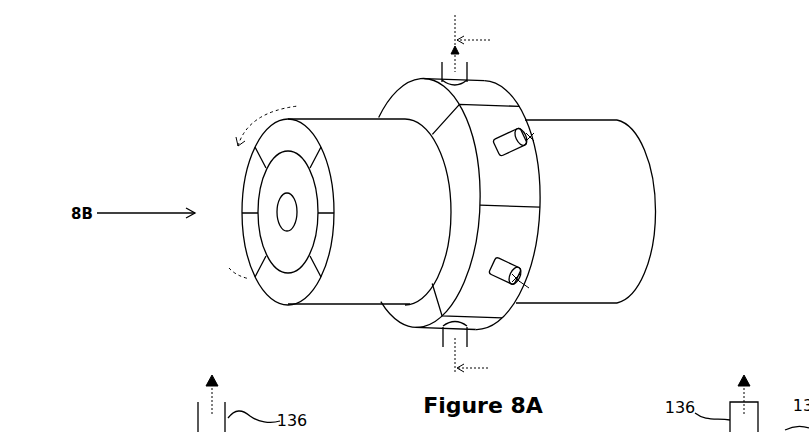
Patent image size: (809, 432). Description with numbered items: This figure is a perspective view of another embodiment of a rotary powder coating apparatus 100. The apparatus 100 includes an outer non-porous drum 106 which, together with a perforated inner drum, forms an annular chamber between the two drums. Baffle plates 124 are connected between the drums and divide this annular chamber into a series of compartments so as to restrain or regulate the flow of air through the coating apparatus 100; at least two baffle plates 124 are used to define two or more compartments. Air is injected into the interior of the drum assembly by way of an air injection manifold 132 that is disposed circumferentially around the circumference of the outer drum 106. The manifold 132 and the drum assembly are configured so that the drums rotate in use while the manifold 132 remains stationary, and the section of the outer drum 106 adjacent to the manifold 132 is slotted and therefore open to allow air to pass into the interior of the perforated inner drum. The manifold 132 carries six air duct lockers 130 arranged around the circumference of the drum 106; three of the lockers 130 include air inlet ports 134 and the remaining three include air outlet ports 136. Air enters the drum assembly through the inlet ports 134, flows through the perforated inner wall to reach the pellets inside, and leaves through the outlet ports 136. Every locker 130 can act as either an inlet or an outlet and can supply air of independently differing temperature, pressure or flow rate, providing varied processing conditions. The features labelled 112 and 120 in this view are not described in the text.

The rotary powder coating apparatus 100 is at (644, 118).
The outer non-porous drum 106 is at (353, 119).
The tab 112 is at (165, 425).
The central bore 120 is at (273, 208).
The baffle plates 124 is at (253, 264).
The air duct lockers 130 is at (492, 128).
The air injection manifold 132 is at (410, 325).
The air inlet ports 134 is at (442, 333).
The air outlet ports 136 is at (468, 68).